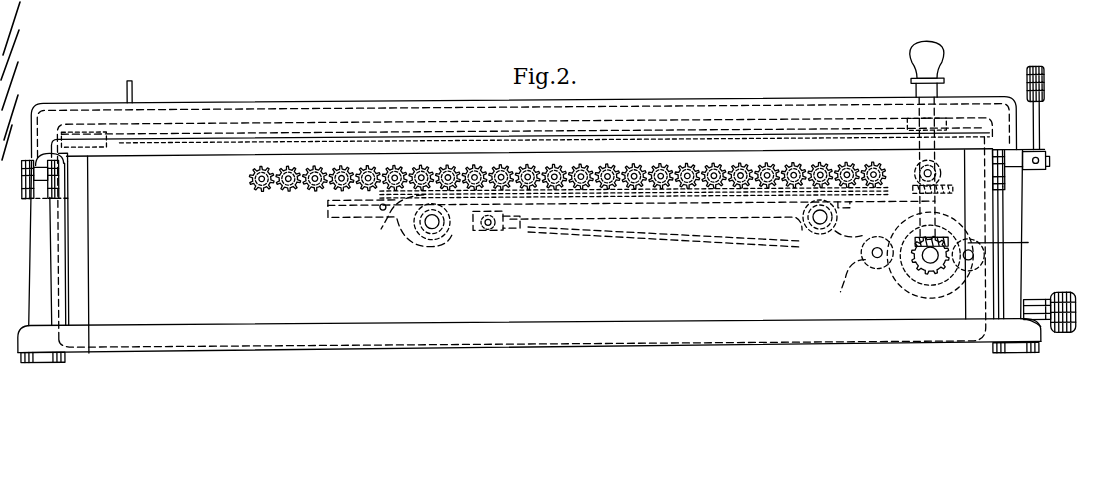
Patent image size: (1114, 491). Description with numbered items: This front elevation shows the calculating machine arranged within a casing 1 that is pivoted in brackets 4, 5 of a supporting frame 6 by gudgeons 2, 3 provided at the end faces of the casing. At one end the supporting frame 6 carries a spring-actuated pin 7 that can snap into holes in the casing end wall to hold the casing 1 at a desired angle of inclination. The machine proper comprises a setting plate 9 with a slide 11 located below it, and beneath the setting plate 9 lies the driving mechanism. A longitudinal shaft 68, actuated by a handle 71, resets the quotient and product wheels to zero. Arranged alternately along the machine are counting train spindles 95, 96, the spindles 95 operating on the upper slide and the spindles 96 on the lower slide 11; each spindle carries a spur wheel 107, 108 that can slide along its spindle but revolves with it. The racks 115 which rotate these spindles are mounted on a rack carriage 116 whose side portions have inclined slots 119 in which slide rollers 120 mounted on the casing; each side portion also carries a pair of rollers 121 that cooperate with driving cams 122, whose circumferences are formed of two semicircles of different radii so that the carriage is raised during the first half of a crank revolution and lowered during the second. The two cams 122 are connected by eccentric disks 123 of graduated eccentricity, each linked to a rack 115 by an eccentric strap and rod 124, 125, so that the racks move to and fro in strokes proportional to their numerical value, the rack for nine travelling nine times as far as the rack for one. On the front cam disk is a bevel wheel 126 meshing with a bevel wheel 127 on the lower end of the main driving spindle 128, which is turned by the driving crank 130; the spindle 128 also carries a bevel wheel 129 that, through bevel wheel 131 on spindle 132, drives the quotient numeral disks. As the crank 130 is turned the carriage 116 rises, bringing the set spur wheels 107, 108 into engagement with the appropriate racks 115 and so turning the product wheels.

The casing 1 is at (525, 214).
The gudgeon 2 is at (1026, 183).
The gudgeon 3 is at (30, 192).
The bracket 4 is at (1015, 282).
The bracket 5 is at (36, 281).
The supporting frame 6 is at (20, 353).
The spring-actuated pin 7 is at (1062, 299).
The setting plate 9 is at (213, 130).
The lower slide 11 is at (287, 105).
The longitudinal shaft 68 is at (1046, 166).
The handle 71 is at (1028, 85).
The counting train spindle 95 is at (660, 170).
The counting train spindle 96 is at (251, 176).
The spur wheel 107 is at (257, 190).
The spur wheel 108 is at (287, 190).
The rack 115 is at (378, 212).
The rack carriage 116 is at (656, 218).
The inclined slot 119 is at (441, 232).
The roller 120 is at (425, 227).
The roller 121 is at (860, 262).
The driving cam 122 is at (918, 297).
The eccentric disk 123 is at (950, 272).
The eccentric strap 124 is at (1011, 242).
The rod 125 is at (746, 240).
The bevel wheel 126 is at (920, 268).
The bevel wheel 127 is at (888, 264).
The main driving spindle 128 is at (926, 206).
The bevel wheel 129 is at (936, 192).
The driving crank 130 is at (918, 58).
The bevel wheel 131 is at (938, 173).
The spindle 132 is at (917, 172).